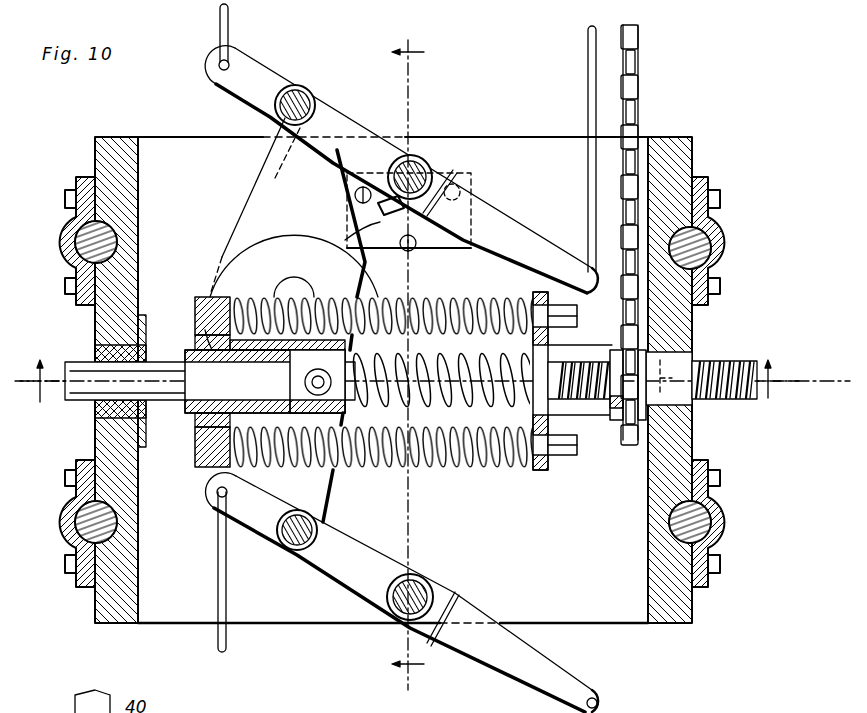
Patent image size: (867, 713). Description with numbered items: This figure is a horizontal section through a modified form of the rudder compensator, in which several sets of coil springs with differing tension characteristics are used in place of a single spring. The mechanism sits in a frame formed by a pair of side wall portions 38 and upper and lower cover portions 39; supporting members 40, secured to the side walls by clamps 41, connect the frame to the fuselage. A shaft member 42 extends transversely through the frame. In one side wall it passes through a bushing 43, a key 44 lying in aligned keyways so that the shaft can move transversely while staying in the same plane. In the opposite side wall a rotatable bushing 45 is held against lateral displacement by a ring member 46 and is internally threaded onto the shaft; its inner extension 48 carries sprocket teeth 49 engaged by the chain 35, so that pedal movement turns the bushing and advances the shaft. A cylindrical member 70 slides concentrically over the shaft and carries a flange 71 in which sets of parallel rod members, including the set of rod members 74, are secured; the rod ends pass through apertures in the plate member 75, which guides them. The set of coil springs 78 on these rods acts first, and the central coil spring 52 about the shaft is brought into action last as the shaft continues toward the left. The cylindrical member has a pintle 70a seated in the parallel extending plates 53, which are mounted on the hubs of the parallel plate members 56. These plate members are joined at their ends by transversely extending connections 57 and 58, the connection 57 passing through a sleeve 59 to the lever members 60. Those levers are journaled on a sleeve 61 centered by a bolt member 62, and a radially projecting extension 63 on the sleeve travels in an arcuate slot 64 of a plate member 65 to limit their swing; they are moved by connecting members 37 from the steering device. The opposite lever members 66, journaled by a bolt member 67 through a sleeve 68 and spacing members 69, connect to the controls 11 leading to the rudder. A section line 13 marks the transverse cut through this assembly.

The controls 11 is at (244, 648).
The section line 13 is at (408, 361).
The chain 35 is at (640, 92).
The connecting members 37 is at (230, 26).
The side wall portions 38 is at (140, 212).
The cover portions 39 is at (540, 137).
The supporting members 40 is at (705, 240).
The clamps 41 is at (64, 198).
The shaft member 42 is at (160, 350).
The bushing 43 is at (96, 358).
The key 44 is at (70, 402).
The rotatable bushing 45 is at (630, 424).
The ring member 46 is at (692, 356).
The inner extension 48 is at (608, 425).
The sprocket teeth 49 is at (616, 444).
The coil spring 52 is at (455, 366).
The parallel extending plates 53 is at (291, 292).
The parallel plate members 56 is at (248, 184).
The transversely extending connection 57 is at (262, 120).
The transversely extending connection 58 is at (328, 522).
The sleeve 59 is at (318, 100).
The lever members 60 is at (492, 207).
The sleeve 61 is at (425, 162).
The bolt member 62 is at (340, 148).
The radially projecting extension 63 is at (360, 217).
The arcuate slot 64 is at (398, 250).
The plate member 65 is at (444, 252).
The lever members 66 is at (545, 676).
The bolt member 67 is at (428, 588).
The sleeve 68 is at (460, 602).
The spacing members 69 is at (300, 556).
The cylindrical member 70 is at (256, 300).
The pintle 70a is at (320, 368).
The flange 71 is at (198, 440).
The rod members 74 is at (560, 312).
The plate member 75 is at (556, 347).
The coil springs 78 is at (426, 302).